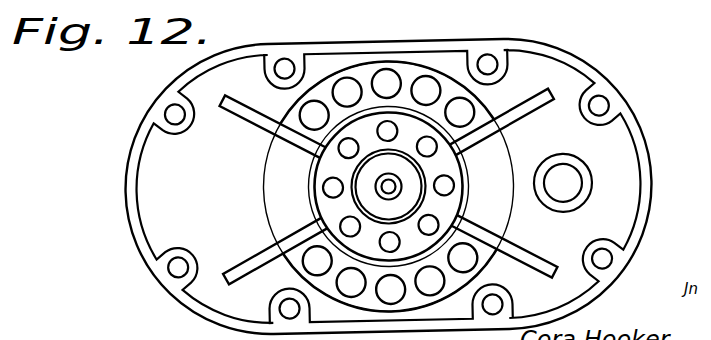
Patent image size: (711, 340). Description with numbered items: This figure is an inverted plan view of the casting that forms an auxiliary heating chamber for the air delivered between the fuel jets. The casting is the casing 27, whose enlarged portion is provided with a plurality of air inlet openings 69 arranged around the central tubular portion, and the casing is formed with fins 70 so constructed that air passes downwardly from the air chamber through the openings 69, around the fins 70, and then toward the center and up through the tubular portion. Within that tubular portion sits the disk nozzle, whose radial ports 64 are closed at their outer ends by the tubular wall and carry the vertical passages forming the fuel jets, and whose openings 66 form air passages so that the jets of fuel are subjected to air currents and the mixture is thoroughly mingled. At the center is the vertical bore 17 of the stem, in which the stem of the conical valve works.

The casing 27 is at (131, 187).
The fins 70 is at (226, 106).
The air inlet openings 69 is at (425, 95).
The radial ports 64 is at (326, 171).
The openings 66 is at (443, 186).
The vertical bore 17 is at (386, 188).